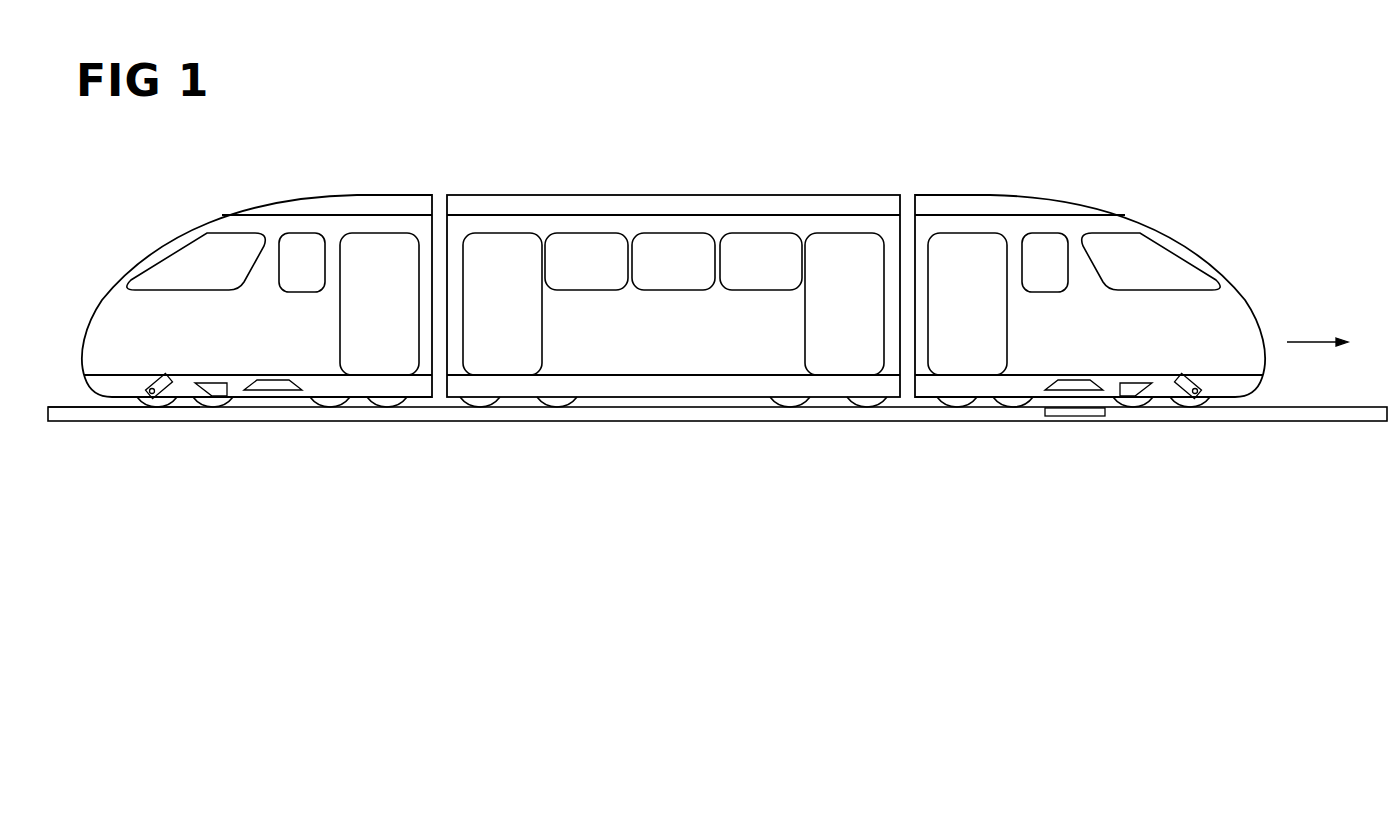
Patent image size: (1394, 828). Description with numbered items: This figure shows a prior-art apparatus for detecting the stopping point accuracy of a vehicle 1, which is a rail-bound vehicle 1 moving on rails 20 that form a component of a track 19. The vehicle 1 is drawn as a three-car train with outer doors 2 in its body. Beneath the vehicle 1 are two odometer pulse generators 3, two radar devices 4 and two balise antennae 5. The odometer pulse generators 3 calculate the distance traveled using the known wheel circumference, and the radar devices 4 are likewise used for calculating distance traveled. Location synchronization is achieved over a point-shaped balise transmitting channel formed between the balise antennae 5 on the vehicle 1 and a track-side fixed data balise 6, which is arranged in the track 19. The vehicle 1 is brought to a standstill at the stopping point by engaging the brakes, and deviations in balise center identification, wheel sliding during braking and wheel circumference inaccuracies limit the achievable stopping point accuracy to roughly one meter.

The vehicle 1 is at (1245, 172).
The outer door 2 is at (972, 327).
The odometer pulse generator 3 is at (154, 380).
The radar device 4 is at (210, 386).
The balise antenna 5 is at (266, 380).
The fixed data balise 6 is at (1075, 417).
The track 19 is at (58, 396).
The rail 20 is at (274, 421).